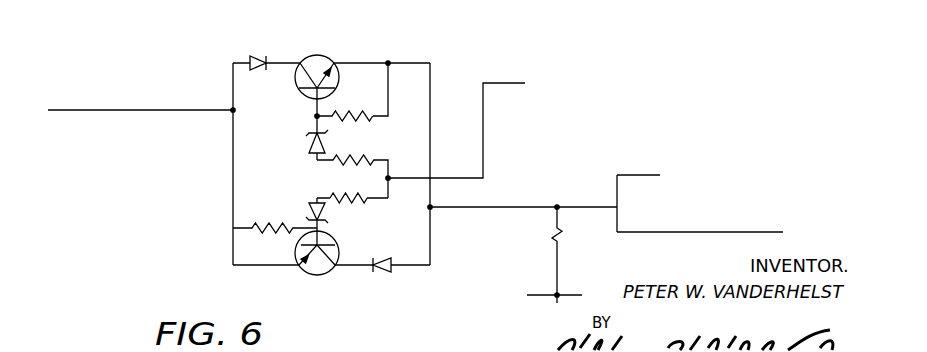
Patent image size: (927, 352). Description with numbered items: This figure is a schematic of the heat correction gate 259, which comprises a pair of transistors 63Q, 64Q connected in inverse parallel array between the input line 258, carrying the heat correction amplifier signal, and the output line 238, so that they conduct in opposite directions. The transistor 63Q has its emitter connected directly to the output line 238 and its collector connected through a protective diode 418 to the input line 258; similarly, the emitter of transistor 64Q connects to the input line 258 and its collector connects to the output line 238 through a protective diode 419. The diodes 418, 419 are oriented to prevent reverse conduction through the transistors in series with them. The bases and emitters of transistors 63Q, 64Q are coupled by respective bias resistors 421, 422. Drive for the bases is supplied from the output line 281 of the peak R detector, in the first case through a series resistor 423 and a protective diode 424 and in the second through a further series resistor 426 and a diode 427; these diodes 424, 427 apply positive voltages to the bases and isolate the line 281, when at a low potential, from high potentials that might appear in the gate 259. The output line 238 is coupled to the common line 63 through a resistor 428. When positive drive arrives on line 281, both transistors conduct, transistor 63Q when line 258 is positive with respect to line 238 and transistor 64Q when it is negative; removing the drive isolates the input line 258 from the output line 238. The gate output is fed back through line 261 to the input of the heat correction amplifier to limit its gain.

The input line 258 is at (91, 110).
The heat correction gate 259 is at (215, 158).
The protective diode 418 is at (261, 56).
The transistor 63Q is at (360, 36).
The bias resistor 421 is at (355, 121).
The protective diode 424 is at (311, 146).
The series resistor 423 is at (375, 165).
The output line of the peak R detector 281 is at (483, 138).
The further series resistor 426 is at (368, 200).
The diode 427 is at (324, 211).
The bias resistor 422 is at (291, 222).
The transistor 64Q is at (303, 272).
The protective diode 419 is at (378, 272).
The output line 238 is at (588, 206).
The feedback loop line 261 is at (660, 218).
The resistor 428 is at (553, 240).
The common line 63 is at (542, 293).